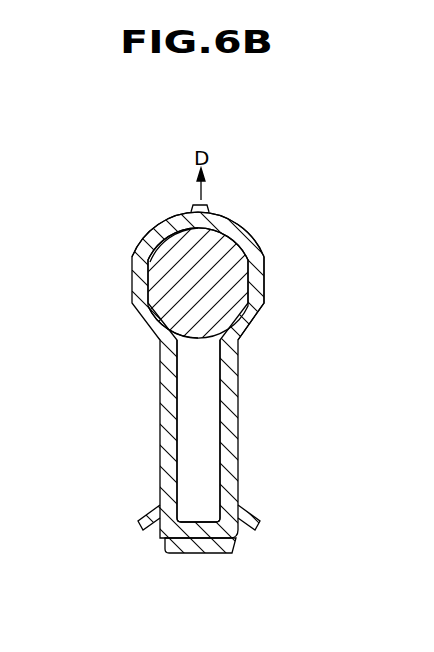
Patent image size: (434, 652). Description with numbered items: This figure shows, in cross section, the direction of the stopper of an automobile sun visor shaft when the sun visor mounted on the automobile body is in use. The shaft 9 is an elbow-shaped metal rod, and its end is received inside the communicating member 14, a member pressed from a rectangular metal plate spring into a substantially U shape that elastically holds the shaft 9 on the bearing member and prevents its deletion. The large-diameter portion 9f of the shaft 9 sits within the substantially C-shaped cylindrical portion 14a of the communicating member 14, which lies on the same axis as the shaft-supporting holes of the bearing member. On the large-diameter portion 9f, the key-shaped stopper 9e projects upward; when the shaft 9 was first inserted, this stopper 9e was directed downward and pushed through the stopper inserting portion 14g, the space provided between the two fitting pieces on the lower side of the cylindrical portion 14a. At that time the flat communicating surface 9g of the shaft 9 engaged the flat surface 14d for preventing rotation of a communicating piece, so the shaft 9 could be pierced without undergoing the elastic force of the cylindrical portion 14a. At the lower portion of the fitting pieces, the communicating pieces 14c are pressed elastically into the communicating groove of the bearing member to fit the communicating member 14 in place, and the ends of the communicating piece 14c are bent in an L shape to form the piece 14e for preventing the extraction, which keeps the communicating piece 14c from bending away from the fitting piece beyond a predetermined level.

The shaft 9 is at (168, 279).
The stopper 9e is at (197, 210).
The portion with a large diameter 9f is at (172, 262).
The flat communicating surface 9g is at (140, 297).
The communicating member 14 is at (240, 221).
The cylindrical portion 14a is at (258, 234).
The surface for preventing rotation of a communicating piece 14d is at (265, 287).
The stopper inserting portion 14g is at (208, 413).
The communicating piece 14c is at (243, 508).
The piece for preventing the extraction 14e is at (230, 553).